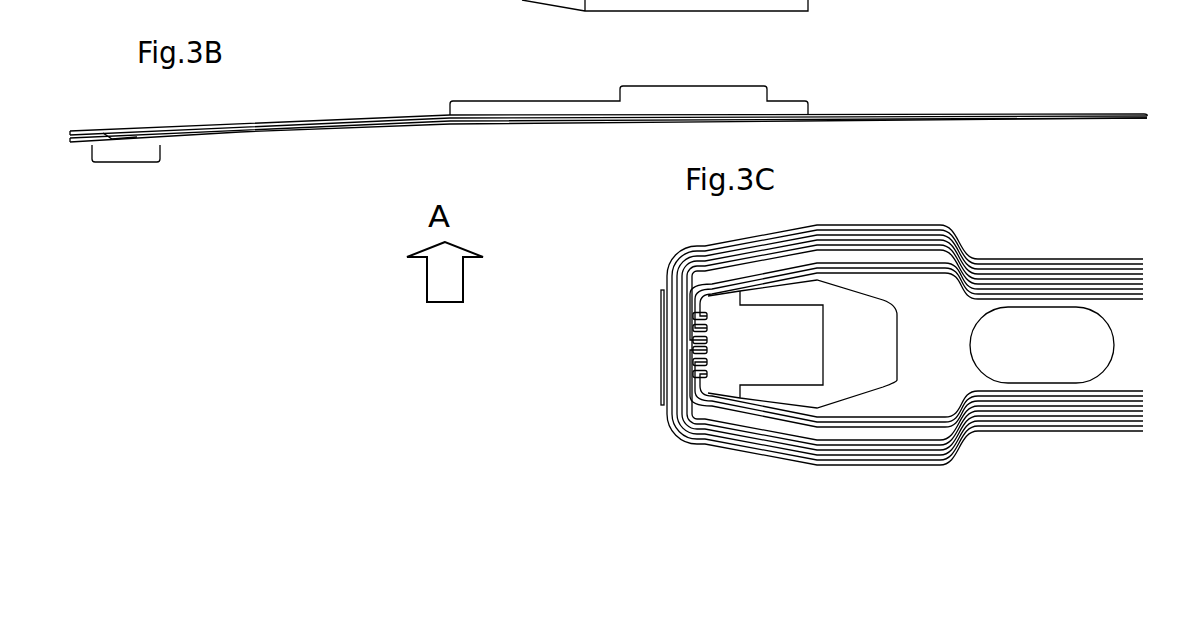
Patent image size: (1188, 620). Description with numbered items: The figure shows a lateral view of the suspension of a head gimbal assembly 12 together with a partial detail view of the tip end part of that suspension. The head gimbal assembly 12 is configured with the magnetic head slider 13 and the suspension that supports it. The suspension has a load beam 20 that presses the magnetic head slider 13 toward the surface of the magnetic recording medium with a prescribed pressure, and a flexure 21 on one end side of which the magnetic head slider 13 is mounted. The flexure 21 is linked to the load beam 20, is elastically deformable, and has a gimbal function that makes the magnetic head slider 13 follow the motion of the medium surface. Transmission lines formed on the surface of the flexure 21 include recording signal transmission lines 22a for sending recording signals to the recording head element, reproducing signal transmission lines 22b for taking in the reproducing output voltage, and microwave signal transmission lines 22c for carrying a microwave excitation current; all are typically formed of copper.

In FIG. 3B, the head gimbal assembly 12 is at (918, 78).
In FIG. 3B, the load beam 20 is at (282, 118).
In FIG. 3B, the flexure 21 is at (378, 118).
In FIG. 3B, the magnetic head slider 13 is at (138, 153).
In FIG. 3C, the recording signal transmission lines 22a is at (877, 226).
In FIG. 3C, the reproducing signal transmission lines 22b is at (905, 246).
In FIG. 3C, the microwave signal transmission lines 22c is at (905, 272).